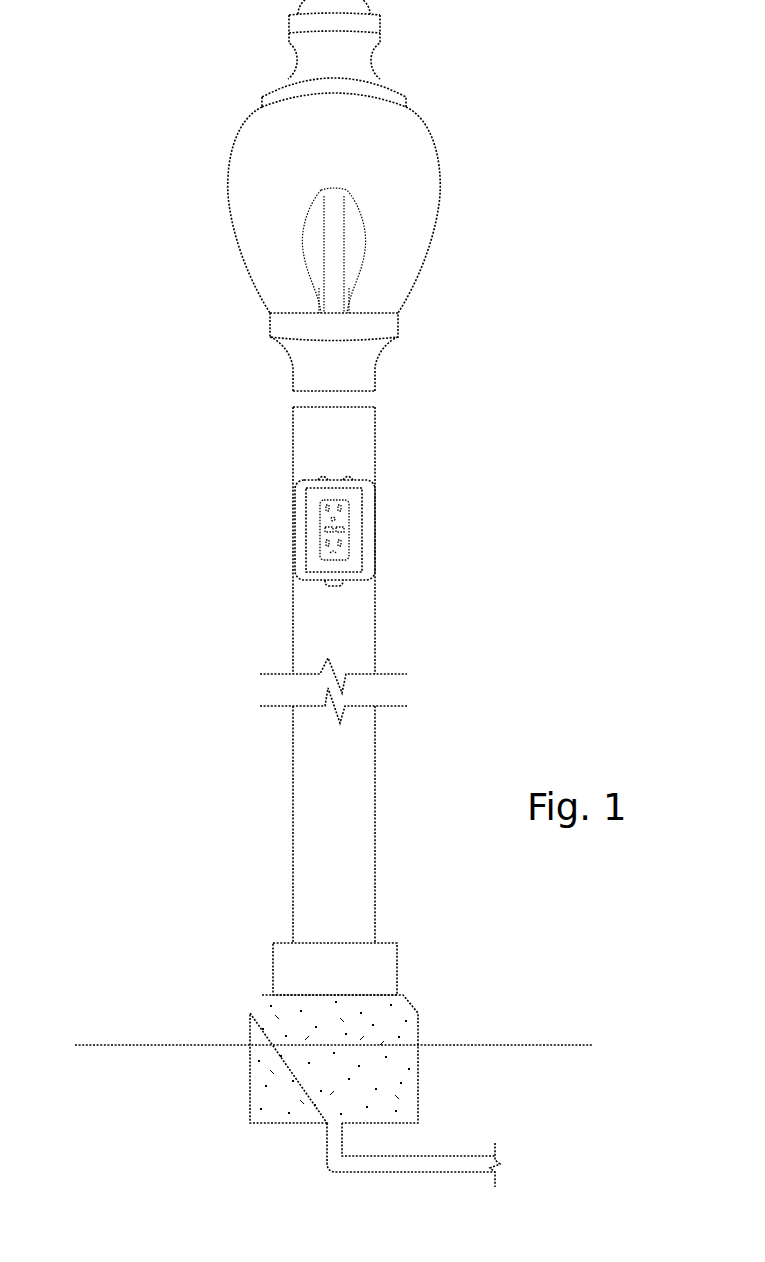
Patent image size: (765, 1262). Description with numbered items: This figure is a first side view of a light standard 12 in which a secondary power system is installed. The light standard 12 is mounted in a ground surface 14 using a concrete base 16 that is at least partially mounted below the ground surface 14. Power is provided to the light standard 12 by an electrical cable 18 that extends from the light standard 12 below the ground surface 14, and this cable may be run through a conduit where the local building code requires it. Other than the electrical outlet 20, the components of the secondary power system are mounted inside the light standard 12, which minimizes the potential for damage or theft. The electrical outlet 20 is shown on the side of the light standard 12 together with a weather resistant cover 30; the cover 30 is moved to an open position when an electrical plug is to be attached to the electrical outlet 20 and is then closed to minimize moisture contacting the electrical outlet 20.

The light standard 12 is at (290, 923).
The ground surface 14 is at (540, 1045).
The concrete base 16 is at (245, 1072).
The electrical cable 18 is at (410, 1176).
The electrical outlet 20 is at (305, 539).
The weather resistant cover 30 is at (350, 528).